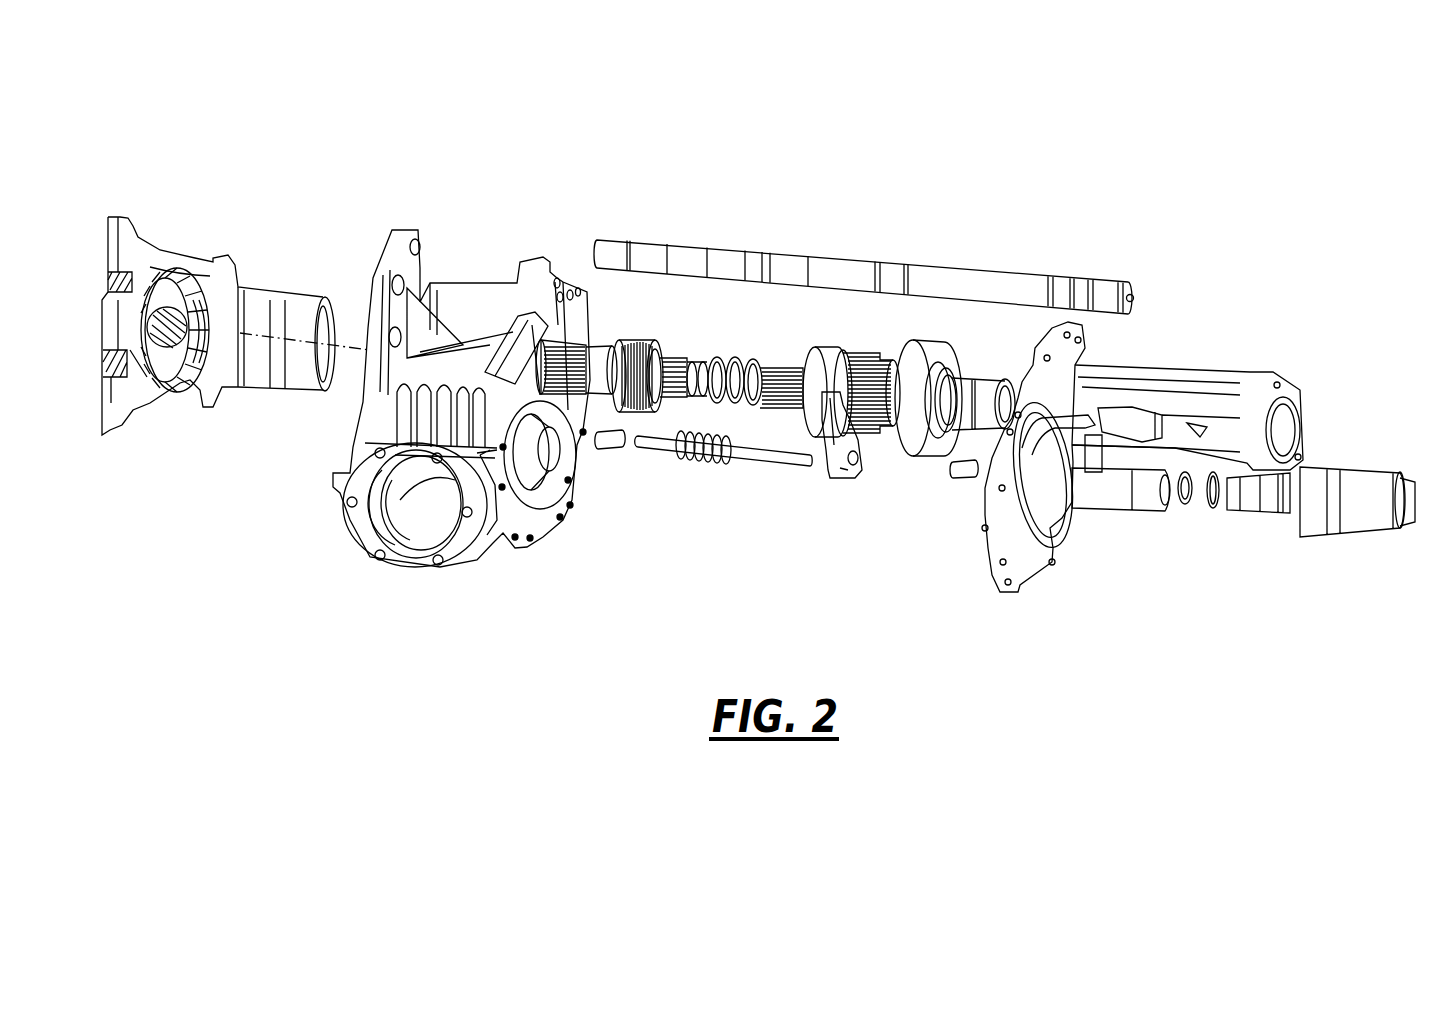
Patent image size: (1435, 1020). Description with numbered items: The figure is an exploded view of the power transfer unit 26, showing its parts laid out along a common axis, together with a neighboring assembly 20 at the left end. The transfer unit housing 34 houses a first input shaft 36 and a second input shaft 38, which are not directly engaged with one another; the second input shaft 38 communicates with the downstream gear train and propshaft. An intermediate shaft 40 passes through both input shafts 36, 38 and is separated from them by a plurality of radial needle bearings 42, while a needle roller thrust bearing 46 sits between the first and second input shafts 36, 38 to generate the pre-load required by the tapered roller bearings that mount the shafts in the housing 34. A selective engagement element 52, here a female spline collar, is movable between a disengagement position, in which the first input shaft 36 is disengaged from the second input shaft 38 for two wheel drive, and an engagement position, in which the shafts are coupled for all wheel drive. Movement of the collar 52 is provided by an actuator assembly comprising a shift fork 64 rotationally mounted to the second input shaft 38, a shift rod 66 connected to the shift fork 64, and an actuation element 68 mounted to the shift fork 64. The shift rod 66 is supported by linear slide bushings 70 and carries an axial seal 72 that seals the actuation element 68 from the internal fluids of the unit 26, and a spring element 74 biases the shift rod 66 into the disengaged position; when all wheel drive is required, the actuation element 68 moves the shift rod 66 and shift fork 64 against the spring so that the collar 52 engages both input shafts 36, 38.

The differential assembly 20 is at (270, 242).
The power transfer unit 26 is at (880, 240).
The transfer unit housing 34 is at (465, 295).
The first input shaft 36 is at (600, 345).
The second input shaft 38 is at (905, 353).
The intermediate shaft 40 is at (682, 252).
The radial needle bearings 42 is at (668, 350).
The needle roller thrust bearing 46 is at (738, 357).
The selective engagement element 52 is at (835, 348).
The shift fork 64 is at (840, 480).
The shift rod 66 is at (655, 448).
The actuation element 68 is at (1360, 523).
The linear slide bushings 70 is at (604, 450).
The axial seal 72 is at (1186, 506).
The spring element 74 is at (705, 463).